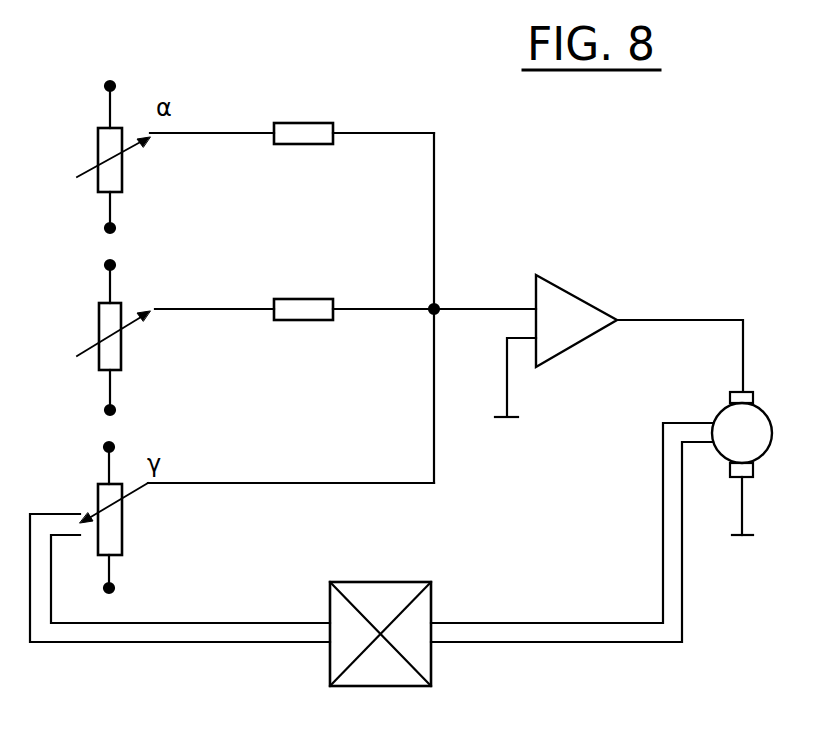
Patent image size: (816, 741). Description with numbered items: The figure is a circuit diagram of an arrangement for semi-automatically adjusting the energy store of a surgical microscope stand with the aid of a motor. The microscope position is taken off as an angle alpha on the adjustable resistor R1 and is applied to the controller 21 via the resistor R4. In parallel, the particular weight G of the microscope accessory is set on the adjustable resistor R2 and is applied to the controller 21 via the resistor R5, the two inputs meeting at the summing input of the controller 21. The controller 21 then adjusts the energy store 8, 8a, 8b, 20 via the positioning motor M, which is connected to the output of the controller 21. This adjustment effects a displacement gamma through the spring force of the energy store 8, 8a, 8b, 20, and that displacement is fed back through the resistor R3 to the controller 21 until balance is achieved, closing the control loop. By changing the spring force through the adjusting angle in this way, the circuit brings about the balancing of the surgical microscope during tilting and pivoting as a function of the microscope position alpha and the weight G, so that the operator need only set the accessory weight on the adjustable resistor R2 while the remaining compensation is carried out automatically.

The adjustable resistor R1 is at (112, 177).
The adjustable resistor R2 is at (112, 355).
The resistor R3 is at (110, 540).
The resistor R4 is at (296, 136).
The resistor R5 is at (292, 311).
The weight G is at (383, 311).
The controller 21 is at (574, 333).
The positioning motor M is at (742, 463).
The energy store 8 is at (472, 649).
The energy store 8a is at (472, 649).
The energy store 8b is at (472, 649).
The energy store 20 is at (420, 657).